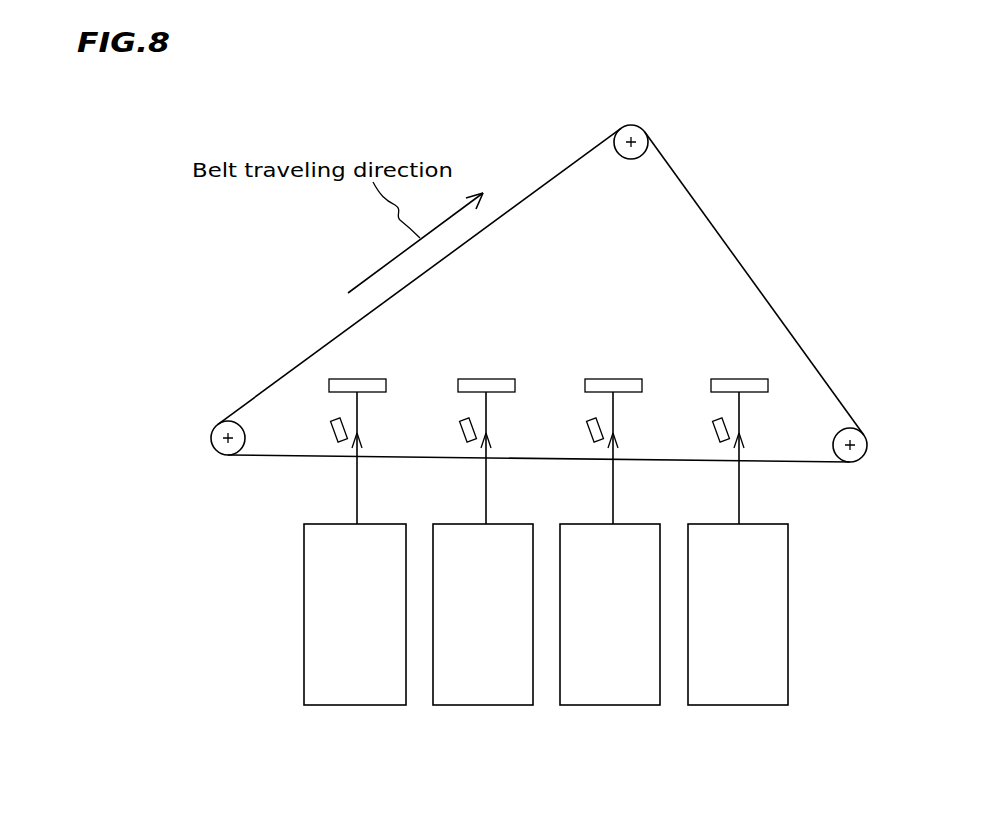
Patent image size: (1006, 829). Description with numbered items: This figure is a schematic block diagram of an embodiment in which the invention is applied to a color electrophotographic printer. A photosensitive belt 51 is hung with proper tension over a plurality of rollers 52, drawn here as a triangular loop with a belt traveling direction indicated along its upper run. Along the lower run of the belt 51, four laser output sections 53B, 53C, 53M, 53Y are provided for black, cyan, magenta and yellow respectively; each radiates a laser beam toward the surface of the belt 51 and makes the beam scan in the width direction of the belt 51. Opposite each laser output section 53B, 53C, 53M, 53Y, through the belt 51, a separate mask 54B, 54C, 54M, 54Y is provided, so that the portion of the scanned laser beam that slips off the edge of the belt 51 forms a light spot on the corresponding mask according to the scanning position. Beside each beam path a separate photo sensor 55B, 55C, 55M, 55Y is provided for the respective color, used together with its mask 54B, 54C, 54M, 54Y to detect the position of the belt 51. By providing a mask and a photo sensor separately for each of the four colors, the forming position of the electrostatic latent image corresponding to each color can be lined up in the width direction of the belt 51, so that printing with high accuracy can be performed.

The photosensitive belt 51 is at (732, 247).
The roller 52 is at (647, 139).
The laser output section 53B is at (353, 706).
The laser output section 53C is at (481, 706).
The laser output section 53M is at (608, 706).
The laser output section 53Y is at (736, 706).
The mask 54B is at (377, 379).
The mask 54C is at (492, 379).
The mask 54M is at (614, 379).
The mask 54Y is at (742, 379).
The photo sensor 55B is at (335, 441).
The photo sensor 55C is at (464, 441).
The photo sensor 55M is at (591, 441).
The photo sensor 55Y is at (717, 441).